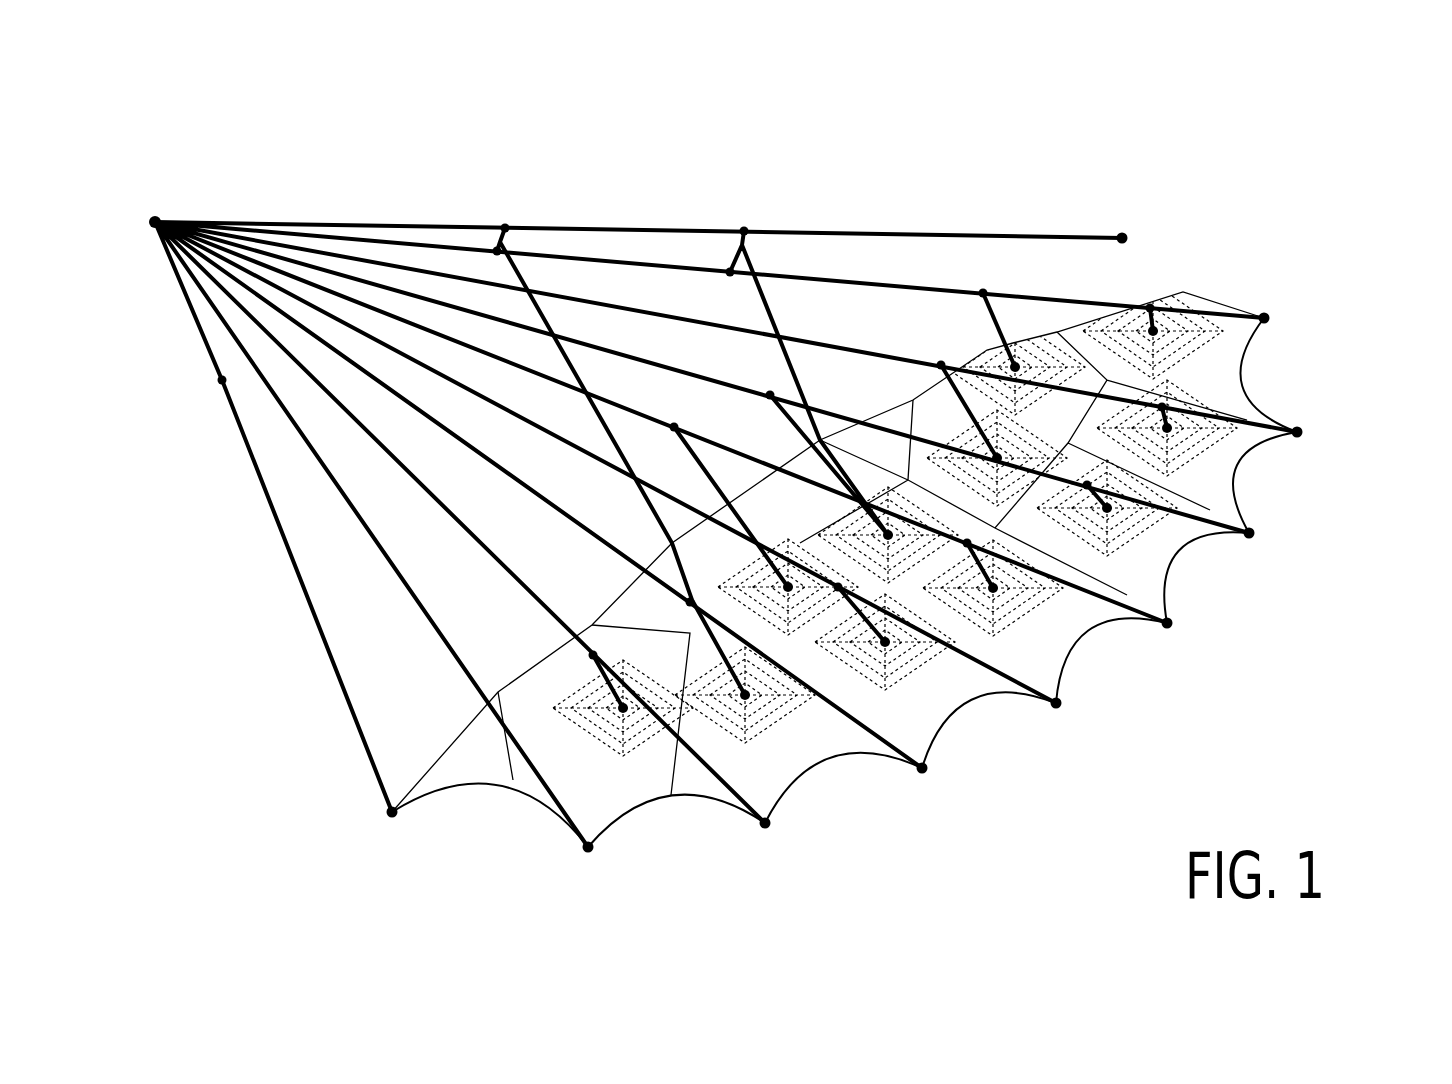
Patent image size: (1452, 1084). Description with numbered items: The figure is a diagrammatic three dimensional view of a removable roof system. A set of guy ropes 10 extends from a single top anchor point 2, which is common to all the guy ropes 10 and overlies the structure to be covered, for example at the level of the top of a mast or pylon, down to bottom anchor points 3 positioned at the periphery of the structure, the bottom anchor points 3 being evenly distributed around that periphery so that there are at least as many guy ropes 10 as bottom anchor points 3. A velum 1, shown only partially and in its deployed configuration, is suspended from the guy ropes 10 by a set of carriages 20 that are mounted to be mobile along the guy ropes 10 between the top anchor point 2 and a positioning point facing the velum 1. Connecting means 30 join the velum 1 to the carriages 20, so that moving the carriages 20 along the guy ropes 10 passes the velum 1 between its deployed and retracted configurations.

The velum 1 is at (1178, 575).
The top anchor point 2 is at (155, 222).
The bottom anchor point 3 is at (1249, 533).
The guy rope 10 is at (880, 283).
The carriage 20 is at (770, 395).
The connecting means 30 is at (1002, 322).